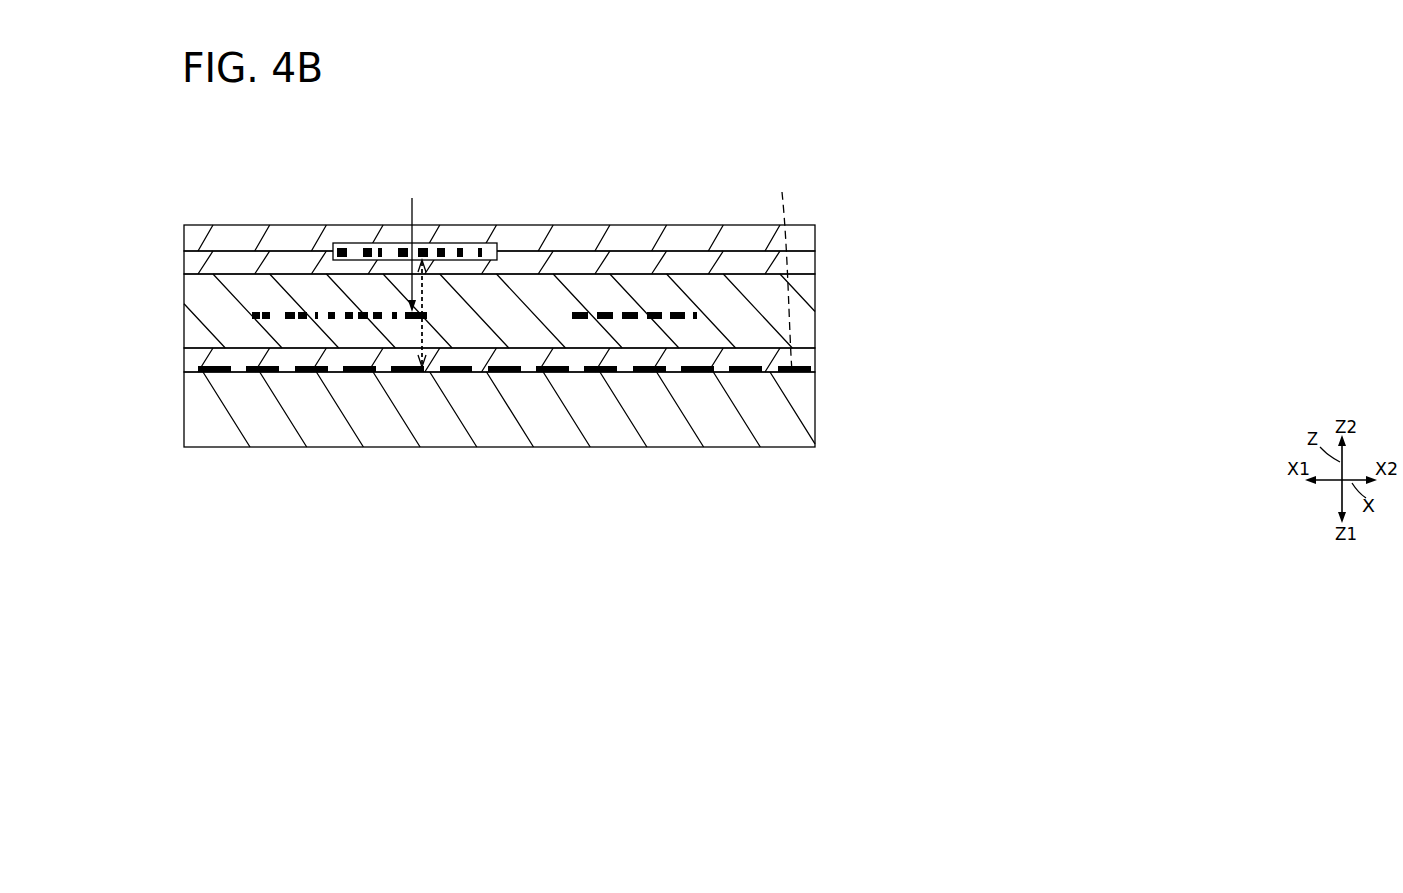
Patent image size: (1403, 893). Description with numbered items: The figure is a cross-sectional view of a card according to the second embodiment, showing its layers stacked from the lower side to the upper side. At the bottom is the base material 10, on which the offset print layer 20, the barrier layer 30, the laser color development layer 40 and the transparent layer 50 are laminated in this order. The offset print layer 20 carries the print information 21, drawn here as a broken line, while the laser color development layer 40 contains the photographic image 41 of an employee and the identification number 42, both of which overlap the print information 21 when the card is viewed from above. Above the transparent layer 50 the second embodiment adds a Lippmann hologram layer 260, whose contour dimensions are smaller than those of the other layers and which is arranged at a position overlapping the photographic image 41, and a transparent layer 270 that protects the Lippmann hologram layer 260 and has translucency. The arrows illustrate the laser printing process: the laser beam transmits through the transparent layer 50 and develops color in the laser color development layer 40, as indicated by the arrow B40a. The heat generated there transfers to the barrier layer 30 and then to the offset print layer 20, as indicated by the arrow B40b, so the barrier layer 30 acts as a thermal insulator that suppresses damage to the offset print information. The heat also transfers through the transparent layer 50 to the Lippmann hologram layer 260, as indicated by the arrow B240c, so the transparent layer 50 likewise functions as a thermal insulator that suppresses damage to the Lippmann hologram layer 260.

The transparent layer 270 is at (815, 236).
The transparent layer 50 is at (815, 268).
The laser color development layer 40 is at (815, 331).
The barrier layer 30 is at (815, 350).
The offset print layer 20 is at (812, 366).
The base material 10 is at (812, 415).
The Lippmann hologram layer 260 is at (357, 243).
The photographic image 41 is at (257, 308).
The identification number 42 is at (627, 313).
The print information 21 is at (784, 266).
The arrow B40a is at (412, 241).
The arrow B240c is at (461, 313).
The arrow B40b is at (458, 313).